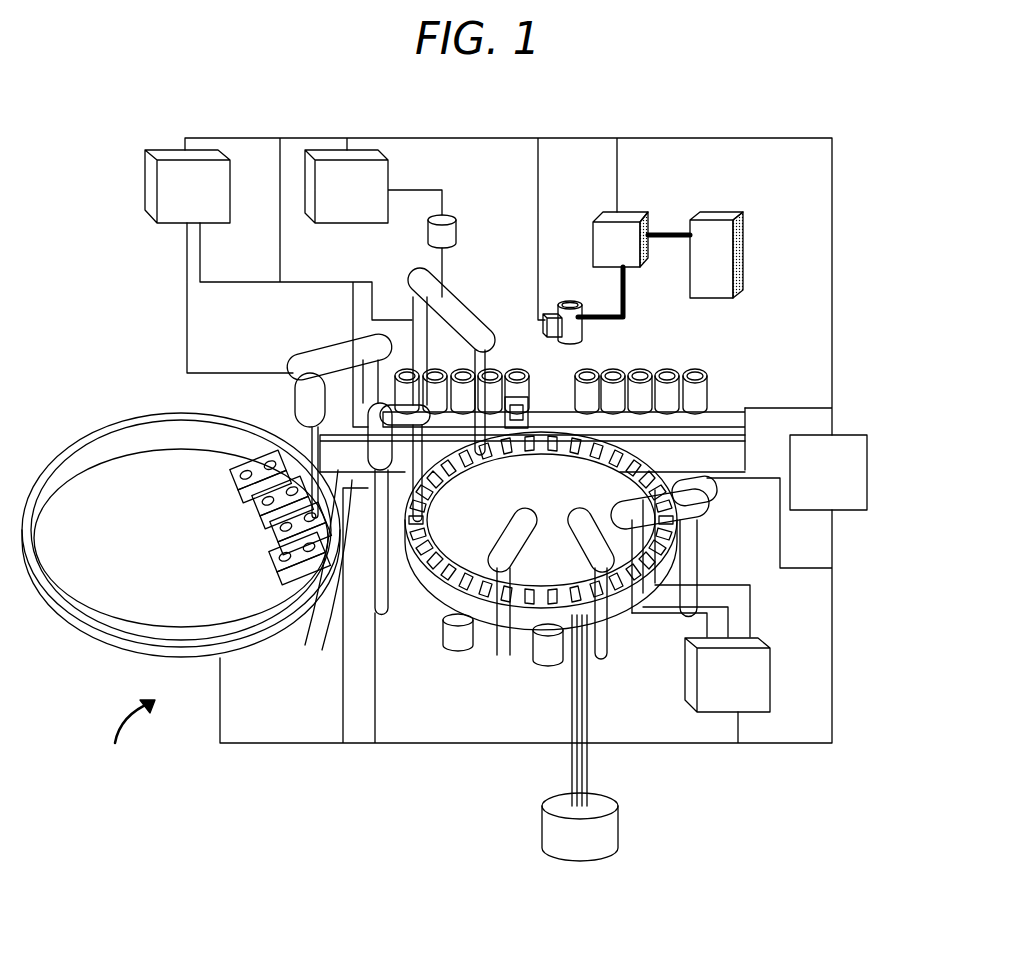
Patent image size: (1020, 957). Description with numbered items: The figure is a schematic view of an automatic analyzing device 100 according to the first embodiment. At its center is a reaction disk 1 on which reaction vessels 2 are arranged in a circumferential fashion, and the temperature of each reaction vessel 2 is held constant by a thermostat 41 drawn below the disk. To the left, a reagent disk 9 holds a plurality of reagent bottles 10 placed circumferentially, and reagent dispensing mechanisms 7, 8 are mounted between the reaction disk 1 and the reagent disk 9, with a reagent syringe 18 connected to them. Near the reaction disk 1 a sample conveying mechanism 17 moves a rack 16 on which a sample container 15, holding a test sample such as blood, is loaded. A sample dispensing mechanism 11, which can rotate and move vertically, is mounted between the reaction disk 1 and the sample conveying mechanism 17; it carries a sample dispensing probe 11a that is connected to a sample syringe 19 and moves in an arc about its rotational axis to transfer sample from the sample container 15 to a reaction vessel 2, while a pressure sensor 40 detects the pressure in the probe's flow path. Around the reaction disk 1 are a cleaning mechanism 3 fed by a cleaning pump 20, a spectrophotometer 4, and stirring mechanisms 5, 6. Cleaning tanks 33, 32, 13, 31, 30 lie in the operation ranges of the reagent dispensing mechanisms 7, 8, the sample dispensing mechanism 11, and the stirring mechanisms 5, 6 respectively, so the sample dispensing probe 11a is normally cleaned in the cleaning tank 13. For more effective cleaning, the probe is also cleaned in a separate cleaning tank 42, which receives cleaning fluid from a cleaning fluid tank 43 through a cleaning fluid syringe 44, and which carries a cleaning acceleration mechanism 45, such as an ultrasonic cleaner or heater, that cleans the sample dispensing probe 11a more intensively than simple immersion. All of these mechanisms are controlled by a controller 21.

The reaction disk 1 is at (405, 600).
The reaction vessel 2 is at (447, 612).
The cleaning mechanism 3 is at (692, 543).
The spectrophotometer 4 is at (693, 500).
The stirring mechanism 5 is at (488, 655).
The stirring mechanism 6 is at (610, 640).
The reagent dispensing mechanism 7 is at (375, 605).
The reagent dispensing mechanism 8 is at (330, 367).
The reagent disk 9 is at (153, 415).
The reagent bottle 10 is at (267, 570).
The sample dispensing mechanism 11 is at (410, 283).
The sample dispensing probe 11a is at (478, 330).
The cleaning tank 13 is at (505, 368).
The sample container 15 is at (707, 387).
The rack 16 is at (693, 423).
The sample conveying mechanism 17 is at (698, 452).
The reagent syringe 18 is at (187, 183).
The sample syringe 19 is at (307, 202).
The cleaning pump 20 is at (750, 692).
The controller 21 is at (843, 505).
The cleaning tank 30 is at (550, 653).
The cleaning tank 31 is at (458, 650).
The cleaning tank 32 is at (333, 615).
The cleaning tank 33 is at (345, 625).
The pressure sensor 40 is at (450, 237).
The thermostat 41 is at (580, 853).
The cleaning tank 42 is at (575, 325).
The cleaning fluid tank 43 is at (728, 247).
The cleaning fluid syringe 44 is at (625, 215).
The cleaning acceleration mechanism 45 is at (552, 337).
The automatic analyzing device 100 is at (126, 742).